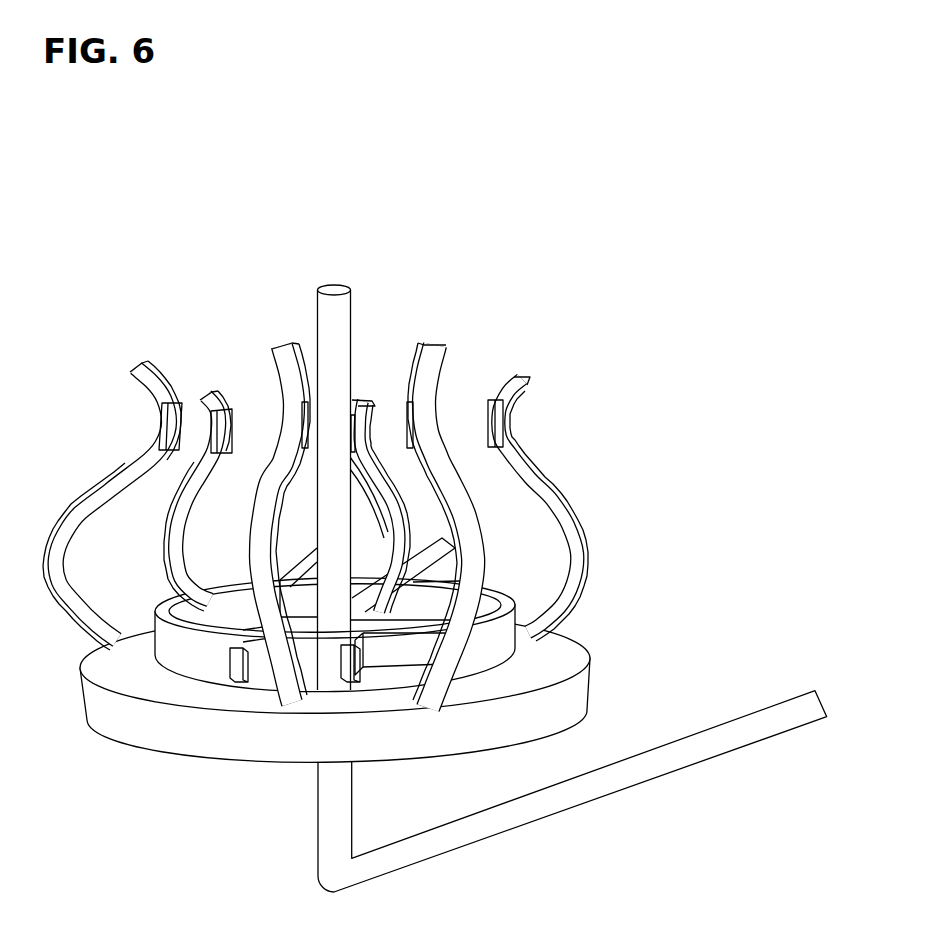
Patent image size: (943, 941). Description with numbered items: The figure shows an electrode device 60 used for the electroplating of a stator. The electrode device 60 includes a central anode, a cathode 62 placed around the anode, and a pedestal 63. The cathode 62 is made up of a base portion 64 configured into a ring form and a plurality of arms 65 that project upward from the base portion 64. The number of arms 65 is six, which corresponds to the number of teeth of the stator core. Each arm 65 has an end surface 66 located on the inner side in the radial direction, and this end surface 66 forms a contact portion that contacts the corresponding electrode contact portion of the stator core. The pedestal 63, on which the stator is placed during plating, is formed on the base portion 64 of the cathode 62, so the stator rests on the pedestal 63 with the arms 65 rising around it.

The electrode device 60 is at (542, 253).
The cathode 62 is at (332, 645).
The pedestal 63 is at (165, 606).
The base portion 64 is at (107, 707).
The arm 65 is at (143, 364).
The end surface 66 is at (178, 408).